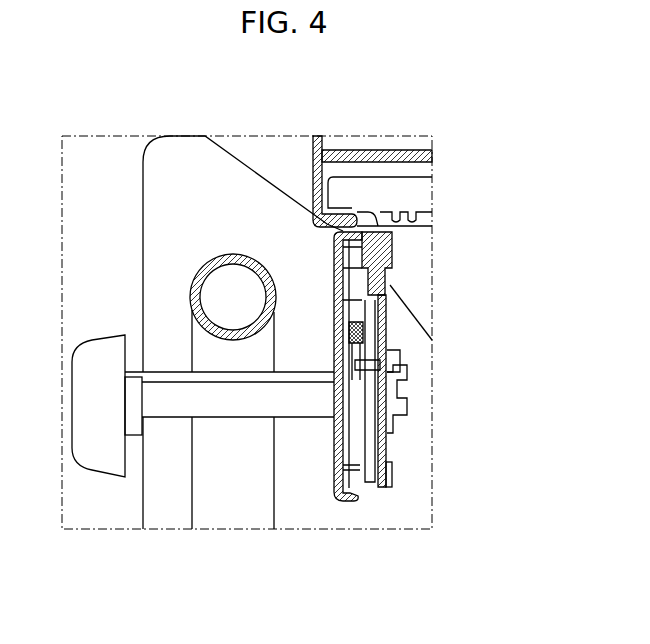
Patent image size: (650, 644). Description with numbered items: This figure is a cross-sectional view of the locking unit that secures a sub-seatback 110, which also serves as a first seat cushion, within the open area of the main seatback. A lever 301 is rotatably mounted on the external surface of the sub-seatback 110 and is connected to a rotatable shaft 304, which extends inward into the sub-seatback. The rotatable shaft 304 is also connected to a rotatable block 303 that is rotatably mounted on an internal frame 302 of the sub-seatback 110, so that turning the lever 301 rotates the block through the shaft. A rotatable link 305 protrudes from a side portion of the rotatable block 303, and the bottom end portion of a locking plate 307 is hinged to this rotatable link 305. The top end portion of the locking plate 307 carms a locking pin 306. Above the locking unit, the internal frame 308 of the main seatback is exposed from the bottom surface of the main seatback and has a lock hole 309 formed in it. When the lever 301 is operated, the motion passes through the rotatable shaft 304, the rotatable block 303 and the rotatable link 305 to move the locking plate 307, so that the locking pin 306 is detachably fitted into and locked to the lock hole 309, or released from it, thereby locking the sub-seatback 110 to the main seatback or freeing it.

The sub-seatback 110 is at (230, 148).
The lever 301 is at (98, 455).
The internal frame 302 is at (337, 468).
The rotatable block 303 is at (393, 363).
The rotatable shaft 304 is at (227, 405).
The rotatable link 305 is at (372, 480).
The locking pin 306 is at (392, 252).
The locking plate 307 is at (397, 417).
The internal frame of the main seatback 308 is at (333, 208).
The lock hole 309 is at (377, 214).